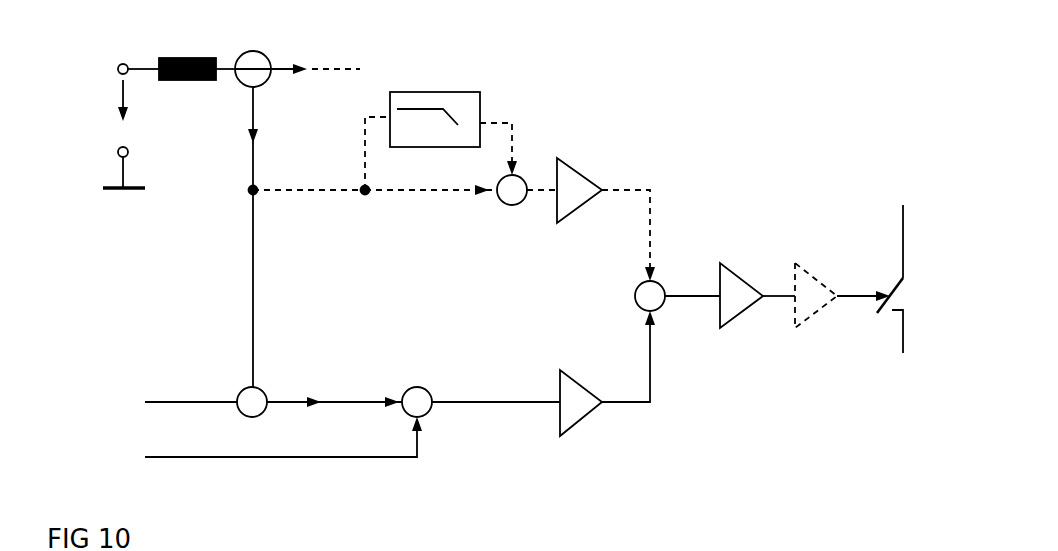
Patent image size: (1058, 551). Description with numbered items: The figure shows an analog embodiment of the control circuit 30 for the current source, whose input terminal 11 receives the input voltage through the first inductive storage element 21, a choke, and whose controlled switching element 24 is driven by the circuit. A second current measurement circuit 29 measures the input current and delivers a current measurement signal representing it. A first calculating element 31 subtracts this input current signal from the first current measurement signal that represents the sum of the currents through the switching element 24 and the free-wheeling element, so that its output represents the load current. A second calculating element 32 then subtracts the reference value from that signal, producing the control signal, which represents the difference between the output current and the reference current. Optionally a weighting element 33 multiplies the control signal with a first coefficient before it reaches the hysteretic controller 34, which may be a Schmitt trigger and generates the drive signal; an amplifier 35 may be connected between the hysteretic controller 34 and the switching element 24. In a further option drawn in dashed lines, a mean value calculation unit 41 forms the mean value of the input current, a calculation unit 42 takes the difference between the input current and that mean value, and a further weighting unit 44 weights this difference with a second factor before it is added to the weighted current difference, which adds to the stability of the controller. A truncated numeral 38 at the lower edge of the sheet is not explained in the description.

The input terminal 11 is at (122, 63).
The first inductive storage element 21 is at (192, 56).
The second current measurement circuit 29 is at (254, 51).
The control circuit 30 is at (649, 97).
The mean value calculation unit 41 is at (440, 92).
The calculation unit 42 is at (523, 173).
The further weighting unit 44 is at (575, 167).
The hysteretic controller 34 is at (732, 263).
The amplifier 35 is at (805, 267).
The controlled switching element 24 is at (885, 317).
The first calculating element 31 is at (267, 388).
The second calculating element 32 is at (428, 383).
The weighting element 33 is at (570, 372).
The sheet numeral 38 is at (542, 548).